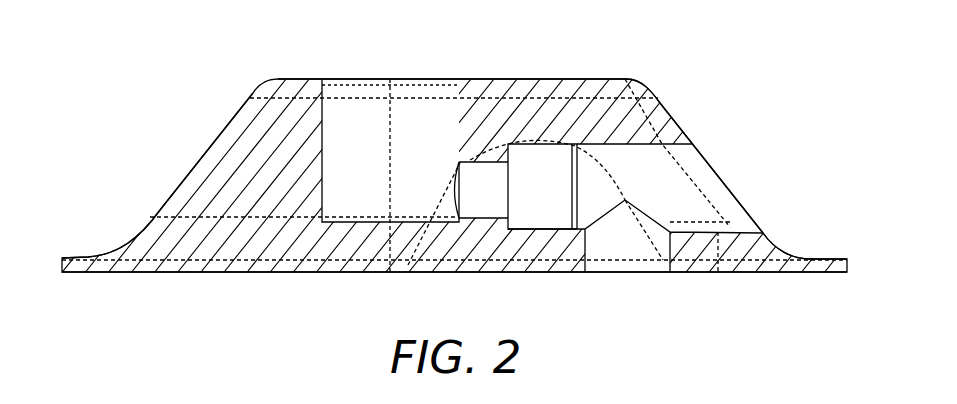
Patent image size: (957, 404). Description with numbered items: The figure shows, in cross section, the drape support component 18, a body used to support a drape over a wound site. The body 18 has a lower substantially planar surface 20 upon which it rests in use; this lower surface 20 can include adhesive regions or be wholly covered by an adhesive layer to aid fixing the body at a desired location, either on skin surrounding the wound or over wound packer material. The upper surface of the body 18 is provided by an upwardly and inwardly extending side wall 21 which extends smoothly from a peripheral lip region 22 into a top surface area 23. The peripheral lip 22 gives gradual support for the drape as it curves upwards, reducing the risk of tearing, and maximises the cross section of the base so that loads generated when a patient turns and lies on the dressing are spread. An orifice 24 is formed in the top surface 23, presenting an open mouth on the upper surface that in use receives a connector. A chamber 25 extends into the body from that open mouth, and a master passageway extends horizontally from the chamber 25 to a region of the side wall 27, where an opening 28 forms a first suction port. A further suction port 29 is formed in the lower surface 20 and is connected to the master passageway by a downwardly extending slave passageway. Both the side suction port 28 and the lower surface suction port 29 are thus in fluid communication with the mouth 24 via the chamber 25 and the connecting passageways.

The drape support component 18 is at (172, 111).
The lower substantially planar surface 20 is at (235, 279).
The side wall 21 is at (182, 193).
The peripheral lip region 22 is at (97, 253).
The top surface area 23 is at (590, 79).
The orifice 24 is at (397, 76).
The chamber 25 is at (373, 168).
The side wall 27 is at (677, 116).
The opening 28 is at (732, 186).
The lower surface suction port 29 is at (637, 279).